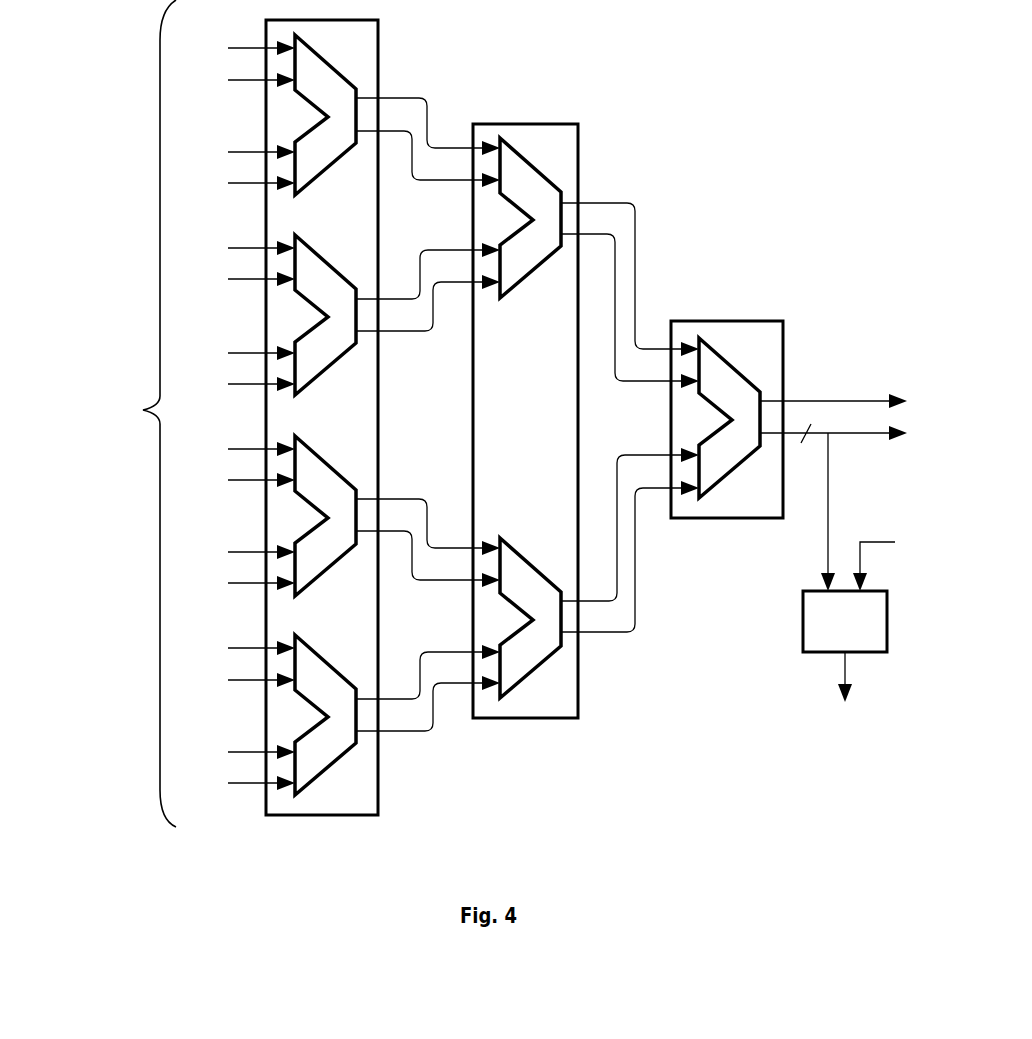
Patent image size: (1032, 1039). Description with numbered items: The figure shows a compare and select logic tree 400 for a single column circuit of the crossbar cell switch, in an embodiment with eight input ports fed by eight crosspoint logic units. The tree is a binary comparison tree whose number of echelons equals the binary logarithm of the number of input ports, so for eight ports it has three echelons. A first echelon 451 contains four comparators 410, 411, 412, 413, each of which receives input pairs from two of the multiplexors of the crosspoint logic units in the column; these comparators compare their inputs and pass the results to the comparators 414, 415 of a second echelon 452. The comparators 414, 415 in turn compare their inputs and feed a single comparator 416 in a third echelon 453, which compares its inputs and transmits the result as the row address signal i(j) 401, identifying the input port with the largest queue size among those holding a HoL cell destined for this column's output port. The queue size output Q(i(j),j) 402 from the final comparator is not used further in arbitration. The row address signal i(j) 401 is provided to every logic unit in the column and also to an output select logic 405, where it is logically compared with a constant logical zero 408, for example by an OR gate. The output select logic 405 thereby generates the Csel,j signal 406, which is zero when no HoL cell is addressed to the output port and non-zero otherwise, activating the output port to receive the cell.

The compare and select logic tree 400 is at (116, 813).
The row address signal i(j) 401 is at (872, 435).
The queue size output Q(i(j),j) 402 is at (863, 400).
The output select logic 405 is at (887, 620).
The Csel,j signal 406 is at (830, 735).
The constant logical zero 408 is at (915, 523).
The comparator 410 is at (347, 78).
The comparator 411 is at (327, 257).
The comparator 412 is at (327, 458).
The comparator 413 is at (327, 657).
The comparator 414 is at (547, 173).
The comparator 415 is at (540, 662).
The comparator 416 is at (743, 375).
The first echelon 451 is at (317, 817).
The second echelon 452 is at (522, 720).
The third echelon 453 is at (722, 518).